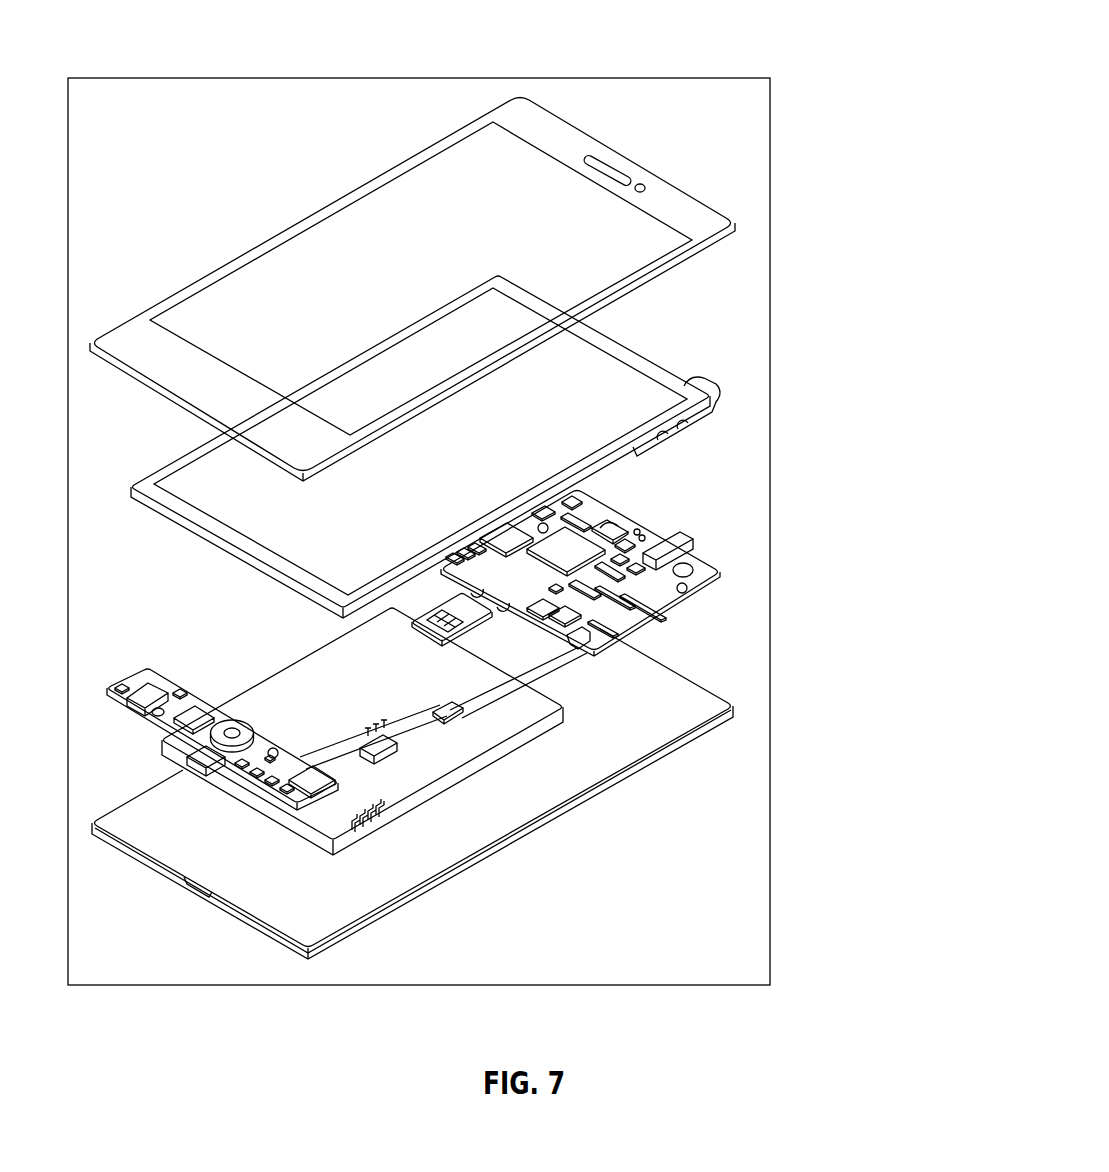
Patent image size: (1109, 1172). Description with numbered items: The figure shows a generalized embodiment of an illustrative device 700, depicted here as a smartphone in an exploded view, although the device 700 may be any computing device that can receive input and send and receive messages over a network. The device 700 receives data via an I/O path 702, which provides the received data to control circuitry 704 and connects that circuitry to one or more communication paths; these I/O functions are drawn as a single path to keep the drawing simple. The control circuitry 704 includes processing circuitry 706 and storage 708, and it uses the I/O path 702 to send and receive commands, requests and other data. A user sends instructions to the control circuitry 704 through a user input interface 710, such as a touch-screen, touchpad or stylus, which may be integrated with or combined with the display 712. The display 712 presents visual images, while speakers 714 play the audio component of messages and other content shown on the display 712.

The device 700 is at (432, 33).
The I/O path 702 is at (222, 756).
The control circuitry 704 is at (713, 629).
The processing circuitry 706 is at (652, 580).
The storage 708 is at (583, 563).
The user input interface 710 is at (653, 398).
The display 712 is at (705, 406).
The speakers 714 is at (617, 166).